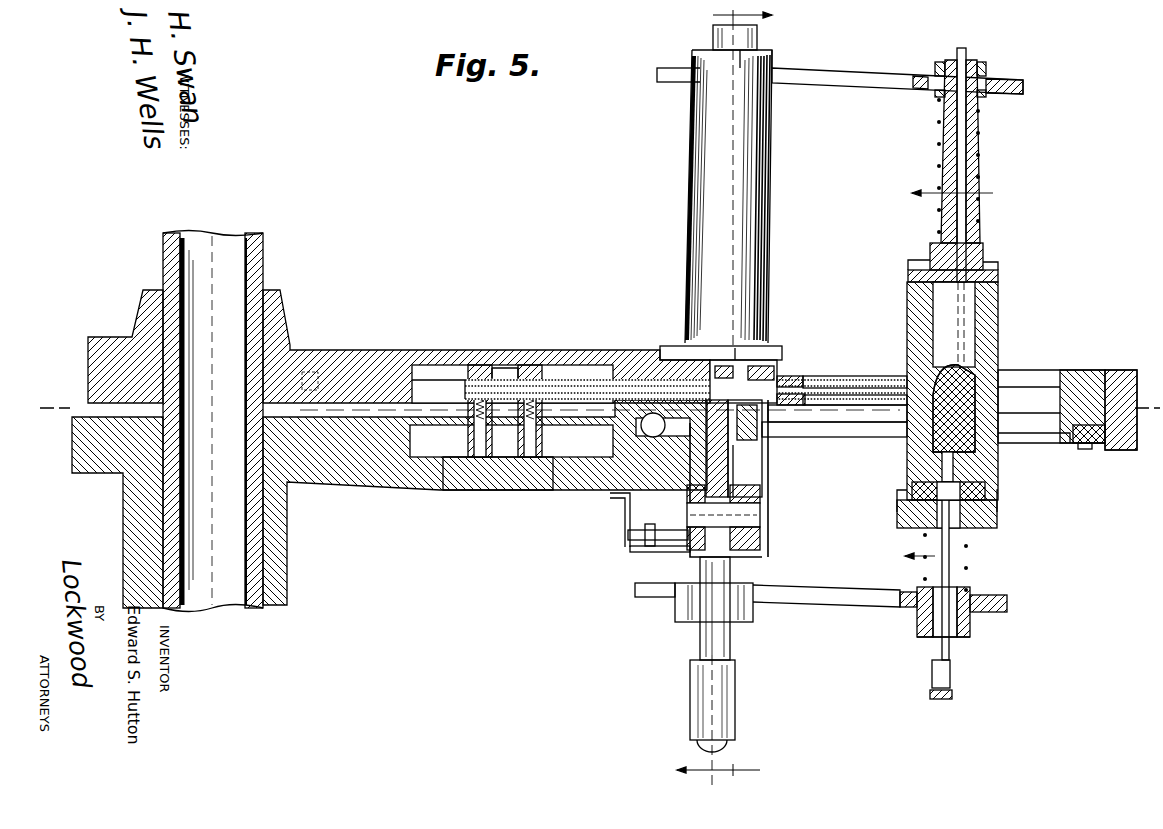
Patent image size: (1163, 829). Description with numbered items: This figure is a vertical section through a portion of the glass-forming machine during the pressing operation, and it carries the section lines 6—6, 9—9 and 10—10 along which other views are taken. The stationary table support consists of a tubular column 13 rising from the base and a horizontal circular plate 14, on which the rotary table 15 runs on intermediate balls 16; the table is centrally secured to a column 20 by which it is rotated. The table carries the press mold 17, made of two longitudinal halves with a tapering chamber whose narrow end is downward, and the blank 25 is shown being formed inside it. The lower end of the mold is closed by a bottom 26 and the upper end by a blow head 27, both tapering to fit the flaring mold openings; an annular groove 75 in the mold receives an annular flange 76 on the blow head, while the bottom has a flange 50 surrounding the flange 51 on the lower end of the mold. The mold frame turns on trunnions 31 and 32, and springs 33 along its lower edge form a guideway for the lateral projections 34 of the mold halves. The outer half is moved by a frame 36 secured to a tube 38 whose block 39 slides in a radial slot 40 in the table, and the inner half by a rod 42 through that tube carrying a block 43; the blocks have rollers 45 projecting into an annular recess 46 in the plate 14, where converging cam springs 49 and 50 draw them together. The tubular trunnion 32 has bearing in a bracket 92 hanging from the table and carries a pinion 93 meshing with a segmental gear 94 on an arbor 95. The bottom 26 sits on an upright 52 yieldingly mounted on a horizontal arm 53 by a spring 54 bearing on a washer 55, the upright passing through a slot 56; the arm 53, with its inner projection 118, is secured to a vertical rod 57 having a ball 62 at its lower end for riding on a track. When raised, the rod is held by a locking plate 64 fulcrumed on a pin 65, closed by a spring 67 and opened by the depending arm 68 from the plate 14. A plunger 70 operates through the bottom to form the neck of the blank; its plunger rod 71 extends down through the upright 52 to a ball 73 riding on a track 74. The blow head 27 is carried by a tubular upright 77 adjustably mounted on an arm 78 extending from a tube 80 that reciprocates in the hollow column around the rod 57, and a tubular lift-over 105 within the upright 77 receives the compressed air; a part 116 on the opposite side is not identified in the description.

The section line 6— 6 is at (941, 374).
The section line 9— 9 is at (688, 245).
The section line 10— 10 is at (734, 400).
The tubular column 13 is at (287, 567).
The table support plate 14 is at (372, 487).
The table 15 is at (372, 352).
The balls 16 is at (642, 430).
The press mold 17 is at (998, 305).
The column 20 is at (263, 283).
The blank 25 is at (962, 372).
The bottom 26 is at (987, 496).
The blow head 27 is at (985, 252).
The trunnion 31 is at (1082, 380).
The tubular trunnion 32 is at (728, 352).
The springs 33 is at (875, 437).
The lateral projections 34 is at (903, 388).
The frame 36 is at (802, 377).
The tube 38 is at (772, 381).
The block 39 is at (540, 400).
The radial slot 40 is at (442, 372).
The rod 42 is at (840, 423).
The block 43 is at (465, 392).
The rollers 45 is at (468, 440).
The annular recess 46 is at (562, 470).
The cam spring 49 is at (455, 490).
The cam spring 50 is at (522, 490).
The flange 51 is at (900, 514).
The upright 52 is at (972, 582).
The horizontal arm 53 is at (822, 600).
The spring 54 is at (920, 566).
The washer 55 is at (1008, 600).
The slot 56 is at (975, 622).
The vertical rod 57 is at (700, 640).
The ball 62 is at (737, 746).
The locking plate 64 is at (650, 552).
The pin 65 is at (628, 535).
The spring 67 is at (651, 525).
The arm 68 is at (625, 515).
The plunger 70 is at (955, 466).
The plunger rod 71 is at (951, 486).
The ball 73 is at (932, 690).
The track 74 is at (940, 702).
The annular groove 75 is at (1000, 280).
The annular flange 76 is at (998, 270).
The tubular upright 77 is at (980, 152).
The arm 78 is at (862, 90).
The tube 80 is at (713, 34).
The bracket 92 is at (744, 470).
The pinion 93 is at (735, 348).
The segmental gear 94 is at (758, 432).
The arbor 95 is at (760, 517).
The tubular lift-over 105 is at (966, 120).
The arm 116 is at (660, 80).
The projection 118 is at (635, 590).